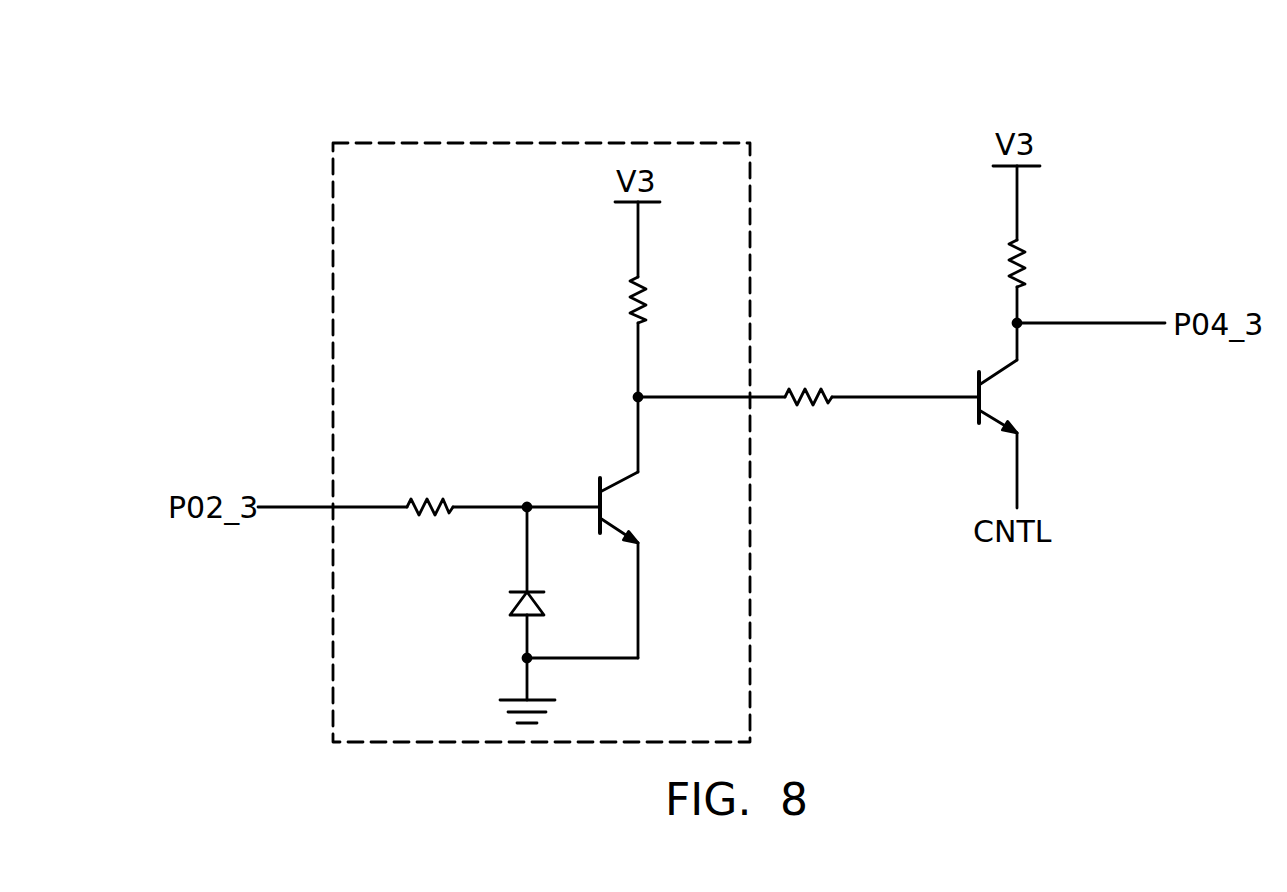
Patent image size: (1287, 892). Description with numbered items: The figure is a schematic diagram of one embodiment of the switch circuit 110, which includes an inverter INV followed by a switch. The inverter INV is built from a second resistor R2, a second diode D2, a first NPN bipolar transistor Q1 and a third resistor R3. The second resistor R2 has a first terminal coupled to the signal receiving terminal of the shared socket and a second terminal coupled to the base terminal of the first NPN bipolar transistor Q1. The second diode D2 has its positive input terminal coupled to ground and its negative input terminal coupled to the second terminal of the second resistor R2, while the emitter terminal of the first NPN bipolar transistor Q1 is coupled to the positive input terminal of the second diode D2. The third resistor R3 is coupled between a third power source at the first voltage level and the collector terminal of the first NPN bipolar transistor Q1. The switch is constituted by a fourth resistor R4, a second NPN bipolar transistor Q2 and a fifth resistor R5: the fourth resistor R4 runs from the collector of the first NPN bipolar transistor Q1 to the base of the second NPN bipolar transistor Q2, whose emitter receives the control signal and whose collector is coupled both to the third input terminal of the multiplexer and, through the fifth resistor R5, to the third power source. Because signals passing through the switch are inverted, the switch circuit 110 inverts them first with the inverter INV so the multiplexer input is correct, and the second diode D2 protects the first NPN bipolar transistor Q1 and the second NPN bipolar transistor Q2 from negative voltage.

The switch circuit 110 is at (1160, 127).
The inverter INV is at (337, 136).
The second resistor R2 is at (428, 490).
The third resistor R3 is at (647, 292).
The fourth resistor R4 is at (808, 385).
The fifth resistor R5 is at (1026, 255).
The first NPN bipolar transistor Q1 is at (627, 506).
The second NPN bipolar transistor Q2 is at (1005, 396).
The second diode D2 is at (546, 602).